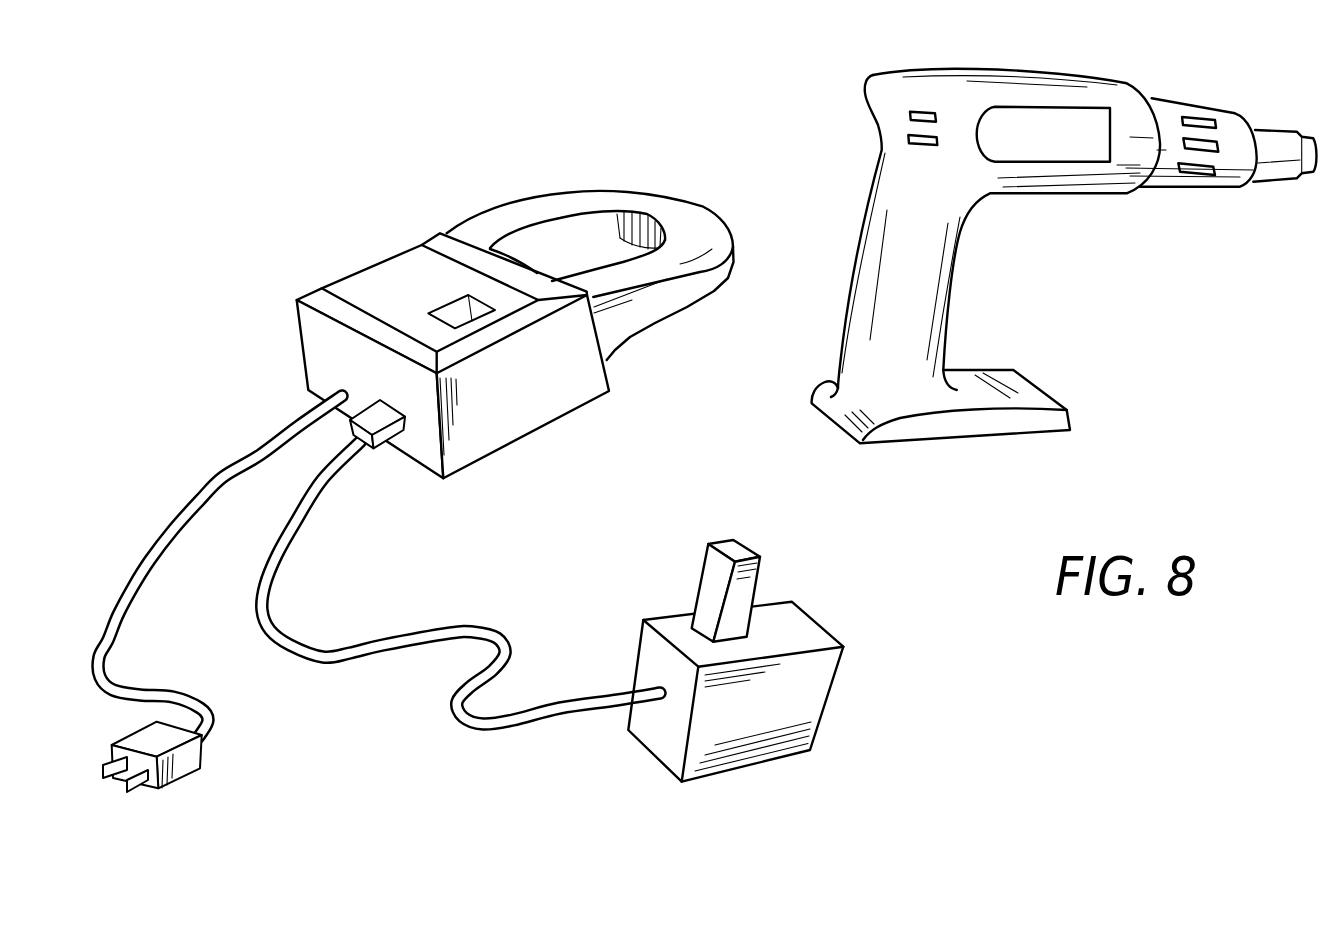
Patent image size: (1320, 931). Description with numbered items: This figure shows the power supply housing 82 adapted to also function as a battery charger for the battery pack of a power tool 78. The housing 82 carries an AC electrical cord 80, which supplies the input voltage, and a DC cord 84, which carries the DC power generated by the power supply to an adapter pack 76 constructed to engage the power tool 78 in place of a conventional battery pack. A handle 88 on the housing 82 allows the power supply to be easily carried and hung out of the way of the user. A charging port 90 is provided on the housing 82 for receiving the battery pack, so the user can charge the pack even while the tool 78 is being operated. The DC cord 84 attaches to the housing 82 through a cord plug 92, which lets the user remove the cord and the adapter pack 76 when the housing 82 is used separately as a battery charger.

The adapter pack 76 is at (810, 695).
The power tool 78 is at (910, 303).
The AC electrical cord 80 is at (223, 477).
The housing 82 is at (525, 413).
The DC cord 84 is at (467, 633).
The handle 88 is at (683, 217).
The charging port 90 is at (448, 316).
The cord plug 92 is at (376, 419).